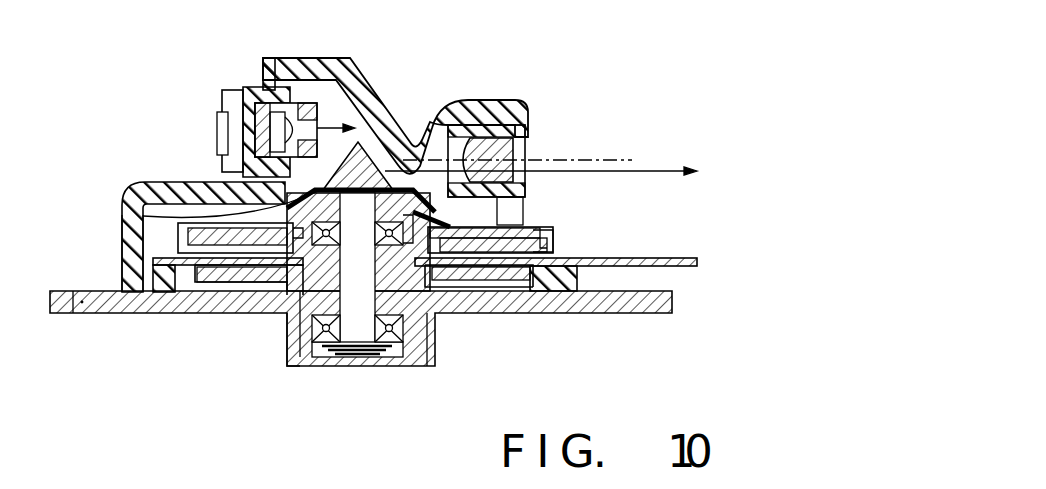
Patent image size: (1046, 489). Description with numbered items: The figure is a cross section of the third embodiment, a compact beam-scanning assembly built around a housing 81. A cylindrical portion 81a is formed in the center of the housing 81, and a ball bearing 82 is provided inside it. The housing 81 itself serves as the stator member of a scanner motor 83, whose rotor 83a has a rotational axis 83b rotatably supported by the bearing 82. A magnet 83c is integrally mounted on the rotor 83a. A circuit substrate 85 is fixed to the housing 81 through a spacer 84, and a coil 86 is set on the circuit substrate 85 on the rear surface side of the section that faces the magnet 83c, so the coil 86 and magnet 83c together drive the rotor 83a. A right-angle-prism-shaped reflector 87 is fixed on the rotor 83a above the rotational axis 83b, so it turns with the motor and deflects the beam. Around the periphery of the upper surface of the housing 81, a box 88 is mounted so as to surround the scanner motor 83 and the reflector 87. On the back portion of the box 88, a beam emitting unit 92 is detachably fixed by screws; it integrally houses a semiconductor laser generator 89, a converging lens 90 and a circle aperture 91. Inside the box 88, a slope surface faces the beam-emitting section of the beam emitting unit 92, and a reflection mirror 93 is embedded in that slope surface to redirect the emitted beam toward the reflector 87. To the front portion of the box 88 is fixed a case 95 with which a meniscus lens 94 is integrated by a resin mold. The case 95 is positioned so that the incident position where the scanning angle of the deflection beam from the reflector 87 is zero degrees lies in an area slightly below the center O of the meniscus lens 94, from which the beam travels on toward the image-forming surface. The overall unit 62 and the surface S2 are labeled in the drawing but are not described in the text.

The optical scanning unit 62 is at (405, 200).
The housing 81 is at (607, 311).
The cylindrical portion 81a is at (285, 338).
The ball bearing 82 is at (392, 233).
The scanner motor 83 is at (432, 321).
The rotor 83a is at (535, 224).
The rotational axis 83b is at (365, 335).
The magnet 83c is at (555, 241).
The spacer 84 is at (153, 274).
The circuit substrate 85 is at (697, 258).
The coil 86 is at (218, 280).
The reflector 87 is at (124, 213).
The box 88 is at (140, 192).
The semiconductor laser generator 89 is at (217, 131).
The converging lens 90 is at (270, 95).
The circle aperture 91 is at (330, 80).
The beam emitting unit 92 is at (248, 87).
The reflection mirror 93 is at (395, 128).
The meniscus lens 94 is at (532, 152).
The case 95 is at (527, 120).
The center of the meniscus lens O is at (558, 156).
The mounting surface S2 is at (122, 314).